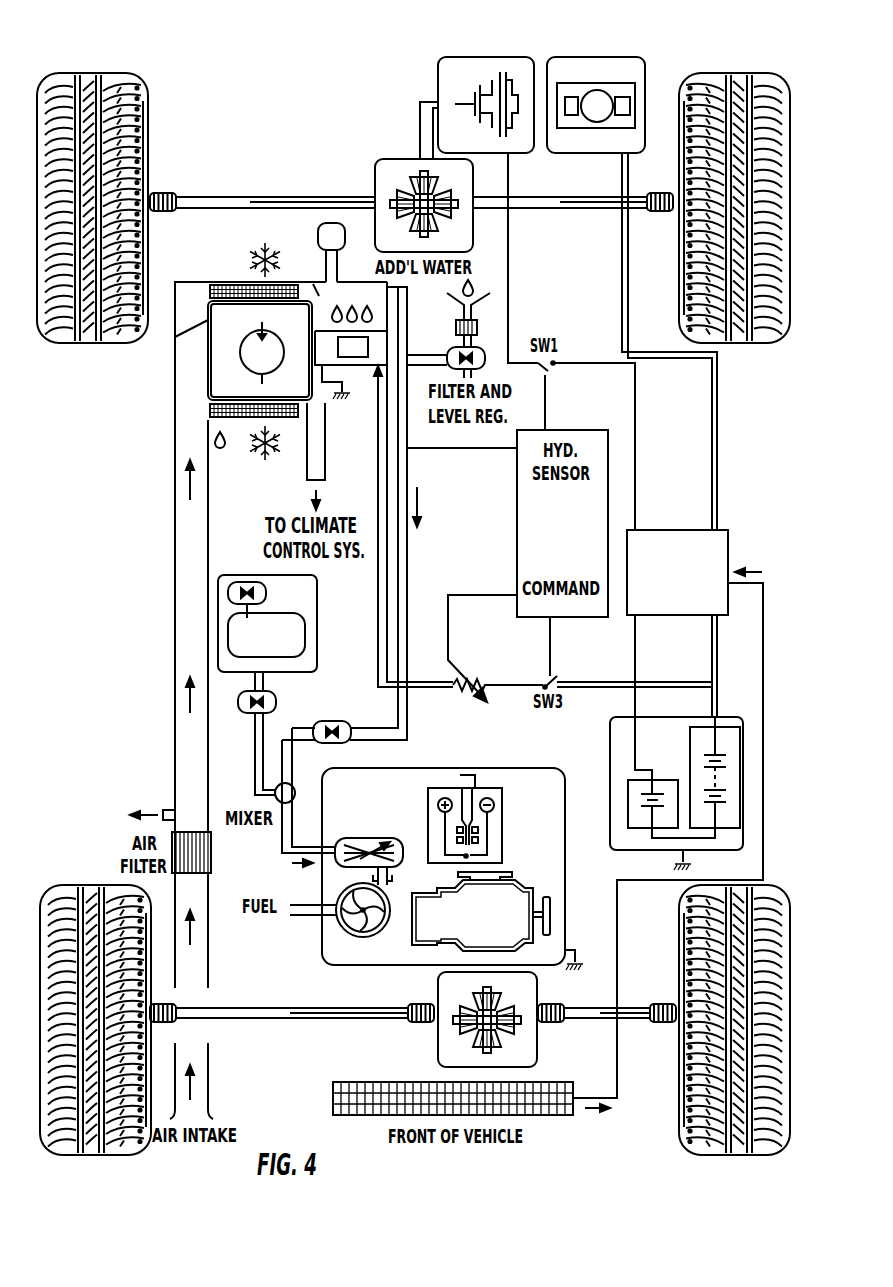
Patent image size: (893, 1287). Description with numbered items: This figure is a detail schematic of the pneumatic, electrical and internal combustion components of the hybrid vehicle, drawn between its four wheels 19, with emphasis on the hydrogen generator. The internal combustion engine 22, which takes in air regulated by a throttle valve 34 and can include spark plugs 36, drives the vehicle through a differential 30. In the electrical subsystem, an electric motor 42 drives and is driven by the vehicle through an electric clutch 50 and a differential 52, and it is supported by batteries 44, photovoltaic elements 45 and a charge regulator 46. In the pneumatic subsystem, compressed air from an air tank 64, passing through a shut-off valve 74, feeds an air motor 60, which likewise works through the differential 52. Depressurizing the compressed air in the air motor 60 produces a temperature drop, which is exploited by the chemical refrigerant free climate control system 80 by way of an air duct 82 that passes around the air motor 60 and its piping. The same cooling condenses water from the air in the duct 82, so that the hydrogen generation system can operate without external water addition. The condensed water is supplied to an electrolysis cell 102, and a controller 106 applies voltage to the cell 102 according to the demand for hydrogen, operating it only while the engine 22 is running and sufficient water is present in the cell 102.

The wheels 19 is at (133, 108).
The internal combustion engine 22 is at (510, 893).
The differential 30 is at (445, 1028).
The throttle valve 34 is at (366, 838).
The spark plugs 36 is at (502, 793).
The electric motor 42 is at (601, 57).
The batteries 44 is at (745, 760).
The photovoltaic elements 45 is at (335, 1090).
The charge regulator 46 is at (664, 540).
The electric clutch 50 is at (465, 57).
The differential 52 is at (397, 160).
The air motor 60 is at (220, 387).
The air tank 64 is at (310, 648).
The shut-off valve 74 is at (272, 707).
The climate control system 80 is at (116, 540).
The air duct 82 is at (182, 757).
The electrolysis cell 102 is at (351, 348).
The controller 106 is at (521, 573).